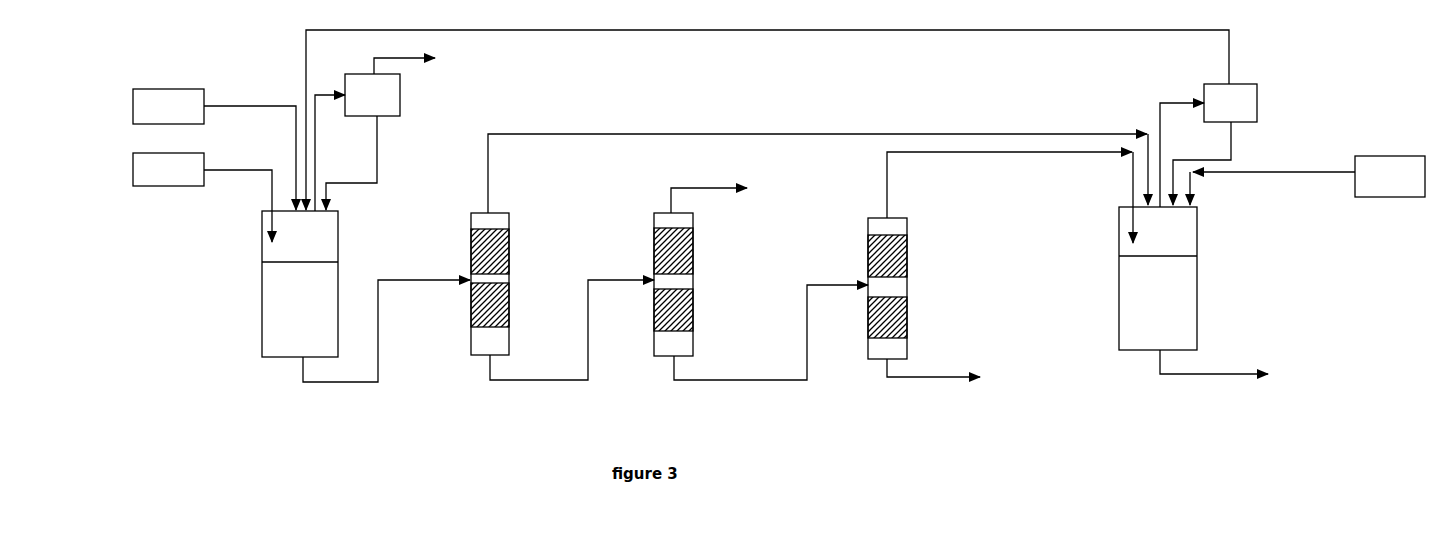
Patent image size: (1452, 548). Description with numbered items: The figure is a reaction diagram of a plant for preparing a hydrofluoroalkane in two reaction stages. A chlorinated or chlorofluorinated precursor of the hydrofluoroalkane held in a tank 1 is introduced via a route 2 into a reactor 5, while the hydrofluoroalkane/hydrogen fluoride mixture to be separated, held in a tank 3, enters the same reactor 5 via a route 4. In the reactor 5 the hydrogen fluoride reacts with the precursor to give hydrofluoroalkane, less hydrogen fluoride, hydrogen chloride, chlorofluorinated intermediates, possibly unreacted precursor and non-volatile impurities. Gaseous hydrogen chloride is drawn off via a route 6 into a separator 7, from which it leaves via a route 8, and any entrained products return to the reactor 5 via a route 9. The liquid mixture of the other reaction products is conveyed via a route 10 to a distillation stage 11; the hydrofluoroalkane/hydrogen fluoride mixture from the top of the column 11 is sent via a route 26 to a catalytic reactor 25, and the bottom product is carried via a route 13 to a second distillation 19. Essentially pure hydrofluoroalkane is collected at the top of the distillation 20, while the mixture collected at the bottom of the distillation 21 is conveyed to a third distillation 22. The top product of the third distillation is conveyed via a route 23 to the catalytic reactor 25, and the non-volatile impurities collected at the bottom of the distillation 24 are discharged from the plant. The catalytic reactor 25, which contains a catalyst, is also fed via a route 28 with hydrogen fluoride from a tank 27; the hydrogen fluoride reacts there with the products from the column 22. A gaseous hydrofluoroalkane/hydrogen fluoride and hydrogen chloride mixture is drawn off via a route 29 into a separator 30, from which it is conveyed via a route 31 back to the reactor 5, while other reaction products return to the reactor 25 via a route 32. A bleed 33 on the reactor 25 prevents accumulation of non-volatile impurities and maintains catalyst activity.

The tank 1 is at (157, 183).
The route 2 is at (267, 171).
The tank 3 is at (128, 114).
The route 4 is at (268, 107).
The reactor 5 is at (260, 298).
The route 6 is at (328, 92).
The separator 7 is at (403, 98).
The route 8 is at (404, 54).
The route 9 is at (378, 139).
The route 10 is at (308, 384).
The distillation stage 11 is at (470, 234).
The route 13 is at (528, 383).
The distillation 19 is at (655, 228).
The top of the distillation 20 is at (694, 190).
The bottom of the distillation 21 is at (673, 379).
The third distillation 22 is at (868, 238).
The route 23 is at (888, 192).
The bottom of the distillation 24 is at (928, 378).
The catalytic reactor 25 is at (1200, 270).
The route 26 is at (490, 193).
The tank 27 is at (1400, 155).
The route 28 is at (1283, 174).
The route 29 is at (1177, 103).
The separator 30 is at (1258, 107).
The route 31 is at (1230, 68).
The route 32 is at (1232, 158).
The bleed 33 is at (1210, 376).